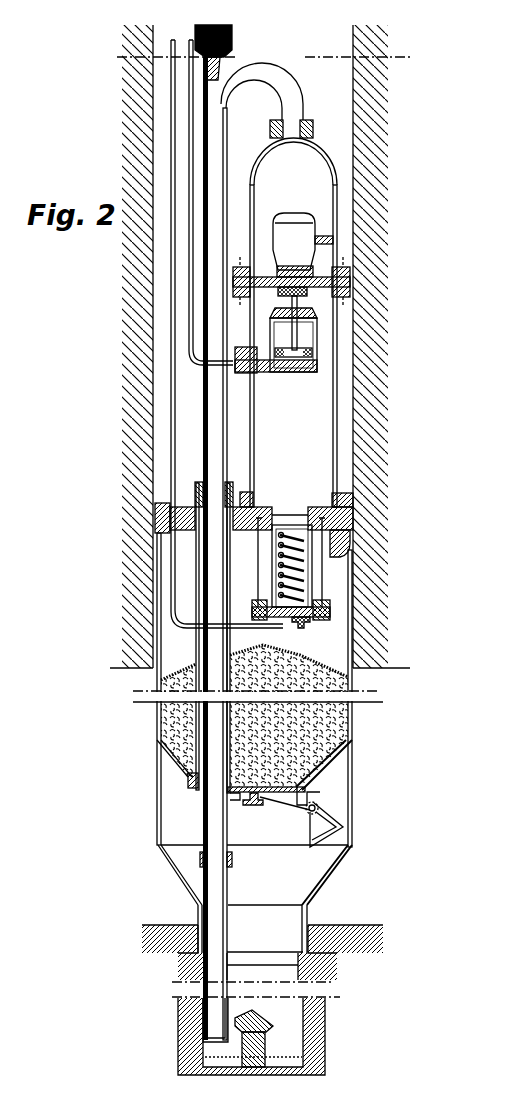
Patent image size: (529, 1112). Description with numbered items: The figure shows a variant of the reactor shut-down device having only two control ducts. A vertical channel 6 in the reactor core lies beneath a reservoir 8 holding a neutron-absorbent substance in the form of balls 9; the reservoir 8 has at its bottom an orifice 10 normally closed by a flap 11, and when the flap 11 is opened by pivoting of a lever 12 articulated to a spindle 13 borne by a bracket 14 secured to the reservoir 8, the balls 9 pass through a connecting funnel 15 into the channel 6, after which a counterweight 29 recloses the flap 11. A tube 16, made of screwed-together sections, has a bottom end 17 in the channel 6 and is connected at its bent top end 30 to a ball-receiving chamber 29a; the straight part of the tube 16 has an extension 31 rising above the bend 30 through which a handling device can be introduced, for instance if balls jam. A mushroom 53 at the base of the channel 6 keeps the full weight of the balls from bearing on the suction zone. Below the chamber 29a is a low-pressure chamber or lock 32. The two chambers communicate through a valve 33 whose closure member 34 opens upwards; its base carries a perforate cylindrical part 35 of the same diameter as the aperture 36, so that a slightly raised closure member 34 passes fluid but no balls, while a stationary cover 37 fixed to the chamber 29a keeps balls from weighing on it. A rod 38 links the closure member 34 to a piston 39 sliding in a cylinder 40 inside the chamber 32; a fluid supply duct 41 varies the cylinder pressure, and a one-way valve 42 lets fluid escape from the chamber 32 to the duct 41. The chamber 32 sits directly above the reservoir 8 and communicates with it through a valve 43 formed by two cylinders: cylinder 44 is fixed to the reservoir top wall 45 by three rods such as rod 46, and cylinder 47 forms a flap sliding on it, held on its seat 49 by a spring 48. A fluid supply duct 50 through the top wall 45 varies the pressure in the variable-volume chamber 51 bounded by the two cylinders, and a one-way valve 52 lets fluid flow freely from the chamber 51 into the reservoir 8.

The vertical channel 6 is at (280, 970).
The reservoir 8 is at (335, 651).
The balls 9 is at (293, 740).
The orifice 10 is at (320, 767).
The flap 11 is at (233, 795).
The lever 12 is at (273, 812).
The spindle 13 is at (330, 817).
The bracket 14 is at (330, 788).
The connecting funnel 15 is at (330, 870).
The tube 16 is at (203, 260).
The bottom end of tube 17 is at (217, 1029).
The counterweight 29 is at (330, 835).
The ball-receiving chamber 29a is at (312, 170).
The bent top end 30 is at (277, 63).
The extension 31 is at (230, 40).
The chamber 32 is at (303, 463).
The valve 33 is at (305, 265).
The closure member 34 is at (330, 268).
The perforate cylindrical part 35 is at (340, 302).
The aperture 36 is at (353, 292).
The stationary cover 37 is at (305, 215).
The rod 38 is at (340, 325).
The piston 39 is at (340, 362).
The cylinder 40 is at (340, 343).
The fluid supply duct 41 is at (233, 365).
The one-way valve 42 is at (340, 387).
The valve 43 is at (343, 495).
The cylinder 44 is at (330, 585).
The top wall 45 is at (350, 533).
The rod 46 is at (270, 565).
The cylinder 47 is at (312, 557).
The spring 48 is at (265, 592).
The seat 49 is at (343, 518).
The fluid supply duct 50 is at (290, 632).
The variable-volume chamber 51 is at (265, 537).
The one-way valve 52 is at (310, 630).
The mushroom 53 is at (263, 1015).